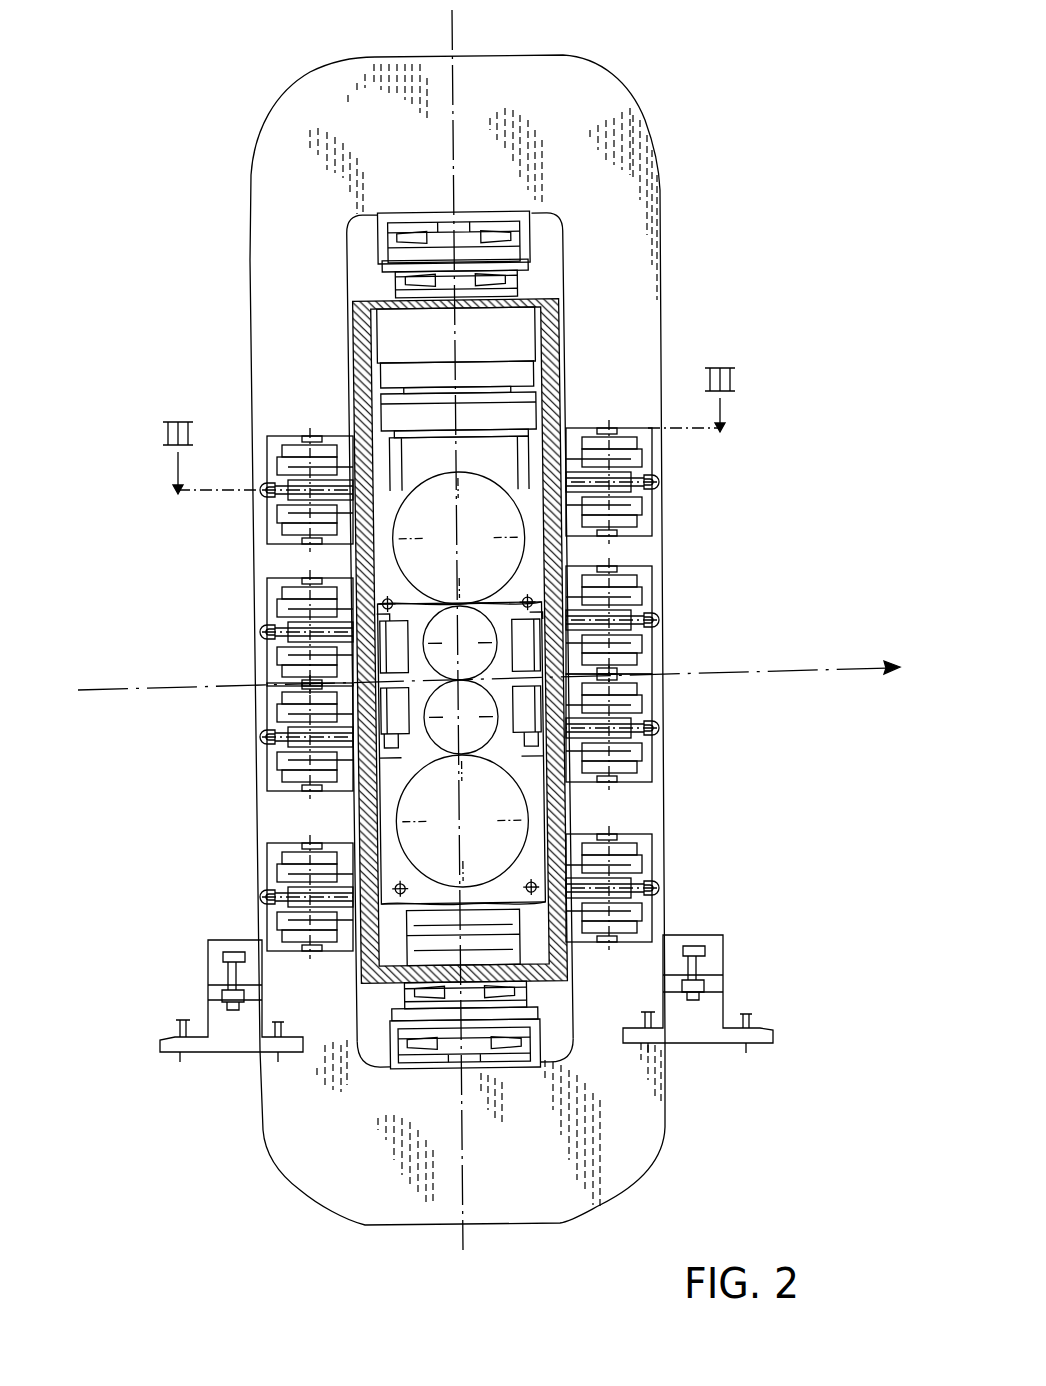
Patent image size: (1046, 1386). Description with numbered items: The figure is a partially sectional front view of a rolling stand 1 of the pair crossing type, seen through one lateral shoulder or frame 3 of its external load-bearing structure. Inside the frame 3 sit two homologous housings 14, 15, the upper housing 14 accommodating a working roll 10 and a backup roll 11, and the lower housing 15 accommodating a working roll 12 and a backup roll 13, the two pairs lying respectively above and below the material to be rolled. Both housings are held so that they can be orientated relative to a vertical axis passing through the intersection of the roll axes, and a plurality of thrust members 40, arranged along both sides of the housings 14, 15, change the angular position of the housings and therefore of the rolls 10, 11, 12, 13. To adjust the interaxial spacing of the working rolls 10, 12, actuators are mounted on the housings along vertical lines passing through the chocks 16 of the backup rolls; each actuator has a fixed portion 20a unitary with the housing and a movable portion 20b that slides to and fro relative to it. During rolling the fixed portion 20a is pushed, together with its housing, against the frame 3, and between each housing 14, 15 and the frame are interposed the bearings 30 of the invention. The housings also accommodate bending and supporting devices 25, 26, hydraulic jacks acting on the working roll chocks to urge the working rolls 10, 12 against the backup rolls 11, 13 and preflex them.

The rolling stand 1 is at (180, 158).
The lateral shoulder or frame 3 is at (605, 108).
The working roll 10 is at (479, 660).
The backup roll 11 is at (475, 554).
The working roll 12 is at (479, 734).
The backup roll 13 is at (478, 836).
The housing 14 is at (360, 340).
The housing 15 is at (563, 797).
The chock 16 is at (412, 458).
The fixed portion of actuator 20a is at (519, 328).
The movable portion of actuator 20b is at (521, 412).
The bending and supporting device 25 is at (395, 650).
The bending and supporting device 26 is at (393, 705).
The bearing 30 is at (533, 241).
The thrust member 40 is at (640, 490).